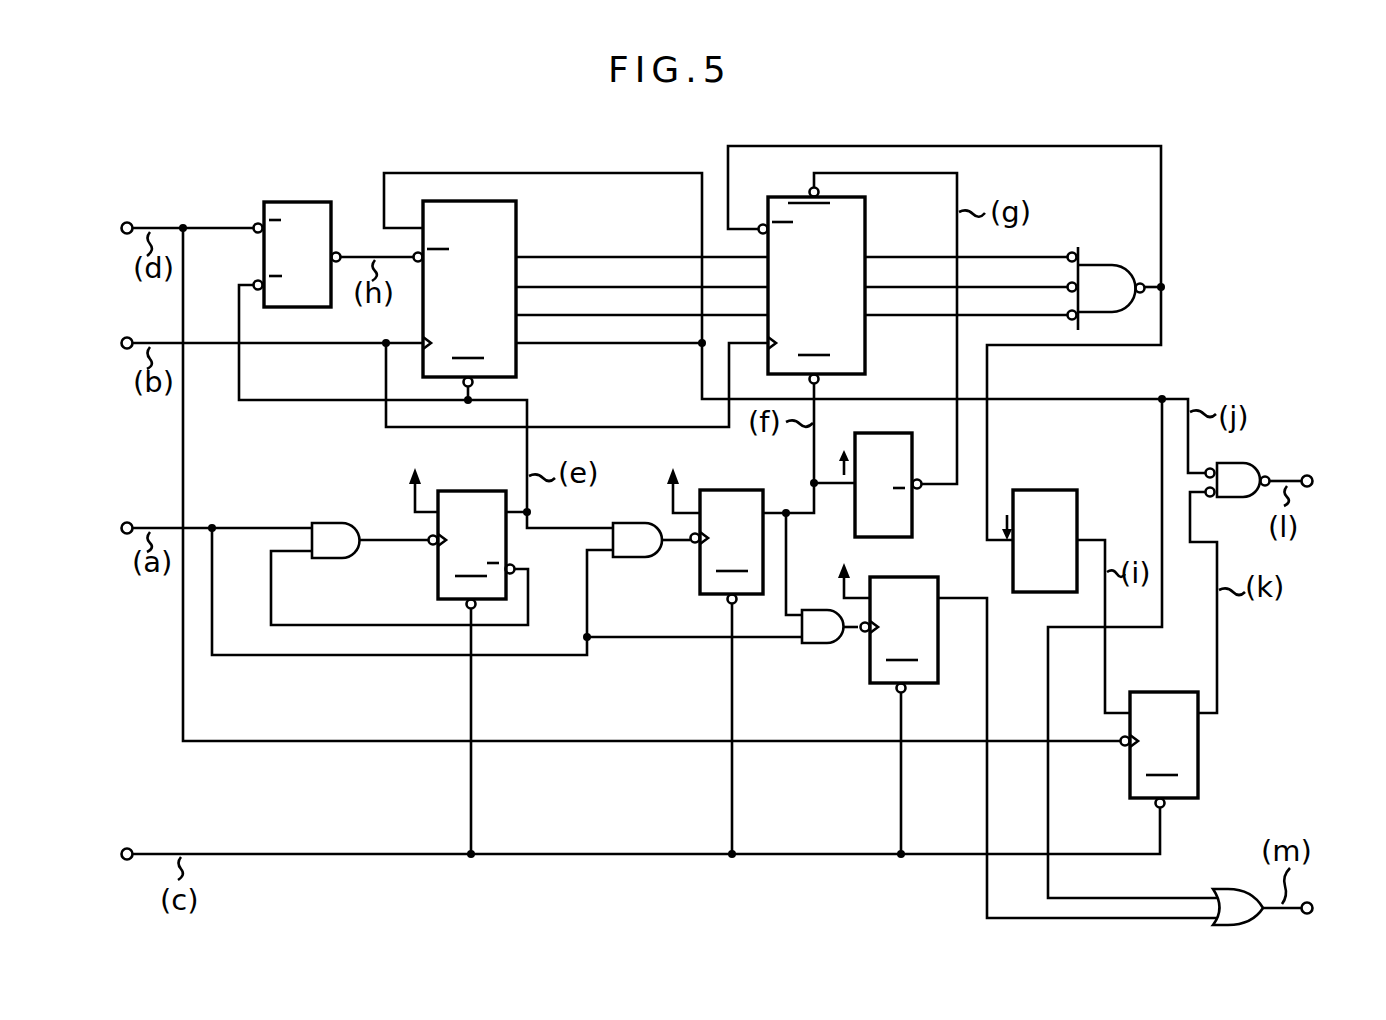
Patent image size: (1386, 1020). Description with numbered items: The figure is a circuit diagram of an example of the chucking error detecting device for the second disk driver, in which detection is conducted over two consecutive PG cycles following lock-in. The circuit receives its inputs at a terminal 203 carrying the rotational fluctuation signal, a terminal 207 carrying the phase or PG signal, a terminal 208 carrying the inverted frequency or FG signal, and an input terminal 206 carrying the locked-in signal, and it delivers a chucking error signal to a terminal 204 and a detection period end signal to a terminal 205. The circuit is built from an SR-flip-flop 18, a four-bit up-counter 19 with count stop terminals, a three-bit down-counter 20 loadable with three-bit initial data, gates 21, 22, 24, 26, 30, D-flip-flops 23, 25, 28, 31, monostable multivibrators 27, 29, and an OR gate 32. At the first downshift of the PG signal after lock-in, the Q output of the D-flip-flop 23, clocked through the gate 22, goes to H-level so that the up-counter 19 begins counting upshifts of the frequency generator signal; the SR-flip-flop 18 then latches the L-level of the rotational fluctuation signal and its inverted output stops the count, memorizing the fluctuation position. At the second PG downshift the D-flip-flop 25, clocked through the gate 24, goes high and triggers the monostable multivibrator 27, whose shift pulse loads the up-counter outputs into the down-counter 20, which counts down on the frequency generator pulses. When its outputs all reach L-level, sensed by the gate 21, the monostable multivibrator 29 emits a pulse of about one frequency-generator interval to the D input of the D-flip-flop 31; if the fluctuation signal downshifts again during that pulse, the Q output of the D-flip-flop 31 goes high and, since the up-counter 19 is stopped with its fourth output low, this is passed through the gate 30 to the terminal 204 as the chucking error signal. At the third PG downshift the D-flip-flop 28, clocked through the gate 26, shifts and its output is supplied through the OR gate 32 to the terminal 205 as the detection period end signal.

The SR-flip-flop 18 is at (287, 202).
The 4-bit up-counter 19 is at (518, 215).
The 3-bit down-counter 20 is at (866, 212).
The AND gate 21 is at (1098, 259).
The AND gate 22 is at (324, 521).
The D-flip-flop 23 is at (464, 489).
The AND gate 24 is at (631, 560).
The D-flip-flop 25 is at (719, 490).
The AND gate 26 is at (812, 647).
The monostable multivibrator 27 is at (913, 528).
The D-flip-flop 28 is at (870, 672).
The monostable multivibrator 29 is at (1044, 488).
The AND gate 30 is at (1258, 467).
The D-flip-flop 31 is at (1200, 765).
The OR gate 32 is at (1229, 888).
The terminal 203 is at (97, 229).
The terminal 204 is at (1339, 482).
The terminal 205 is at (1339, 909).
The input terminal 206 is at (97, 855).
The terminal 207 is at (97, 529).
The terminal 208 is at (97, 344).